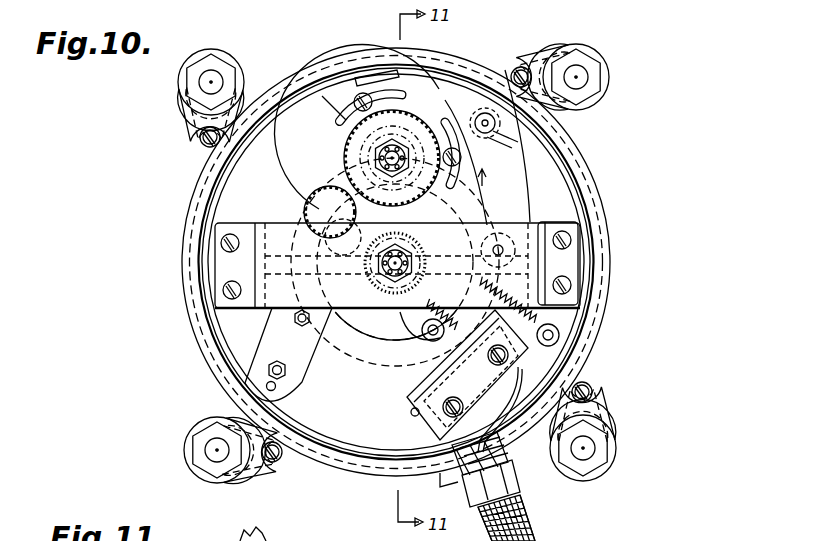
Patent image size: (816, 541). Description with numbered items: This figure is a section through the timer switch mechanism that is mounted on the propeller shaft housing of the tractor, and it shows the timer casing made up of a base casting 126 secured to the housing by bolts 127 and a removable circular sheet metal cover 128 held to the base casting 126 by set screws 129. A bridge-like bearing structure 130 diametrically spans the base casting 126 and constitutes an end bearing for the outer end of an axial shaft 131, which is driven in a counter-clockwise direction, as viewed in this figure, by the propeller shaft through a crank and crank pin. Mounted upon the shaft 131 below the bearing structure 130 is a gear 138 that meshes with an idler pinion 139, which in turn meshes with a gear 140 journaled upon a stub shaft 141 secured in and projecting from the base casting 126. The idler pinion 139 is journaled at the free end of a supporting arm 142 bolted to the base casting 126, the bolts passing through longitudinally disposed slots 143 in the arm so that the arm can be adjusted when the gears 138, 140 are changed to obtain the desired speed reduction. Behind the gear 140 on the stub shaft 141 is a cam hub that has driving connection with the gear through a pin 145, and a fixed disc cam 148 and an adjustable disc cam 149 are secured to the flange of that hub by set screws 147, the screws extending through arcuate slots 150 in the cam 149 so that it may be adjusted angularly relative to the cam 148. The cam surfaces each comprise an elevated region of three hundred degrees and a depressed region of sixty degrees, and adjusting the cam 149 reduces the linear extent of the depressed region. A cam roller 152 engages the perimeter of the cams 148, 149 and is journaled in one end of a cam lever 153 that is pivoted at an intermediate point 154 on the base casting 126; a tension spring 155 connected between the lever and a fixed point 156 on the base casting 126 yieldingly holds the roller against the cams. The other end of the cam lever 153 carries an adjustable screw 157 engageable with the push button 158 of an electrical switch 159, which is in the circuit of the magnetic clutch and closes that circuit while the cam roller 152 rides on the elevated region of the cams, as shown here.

The base casting 126 is at (200, 380).
The bolts 127 is at (205, 82).
The sheet metal cover 128 is at (583, 312).
The set screws 129 is at (200, 137).
The bearing structure 130 is at (372, 312).
The axial shaft 131 is at (365, 313).
The gear 138 is at (396, 312).
The idler pinion 139 is at (312, 204).
The gear 140 is at (344, 160).
The stub shaft 141 is at (383, 156).
The supporting arm 142 is at (298, 232).
The slots 143 is at (295, 319).
The pin 145 is at (397, 150).
The set screws 147 is at (358, 97).
The fixed disc cam 148 is at (357, 76).
The adjustable disc cam 149 is at (333, 102).
The arcuate slots 150 is at (340, 112).
The cam roller 152 is at (485, 112).
The cam lever 153 is at (525, 195).
The intermediate point 154 is at (548, 220).
The tension spring 155 is at (598, 300).
The fixed point 156 is at (580, 335).
The adjustable screw 157 is at (453, 340).
The push button 158 is at (412, 378).
The electrical switch 159 is at (412, 413).